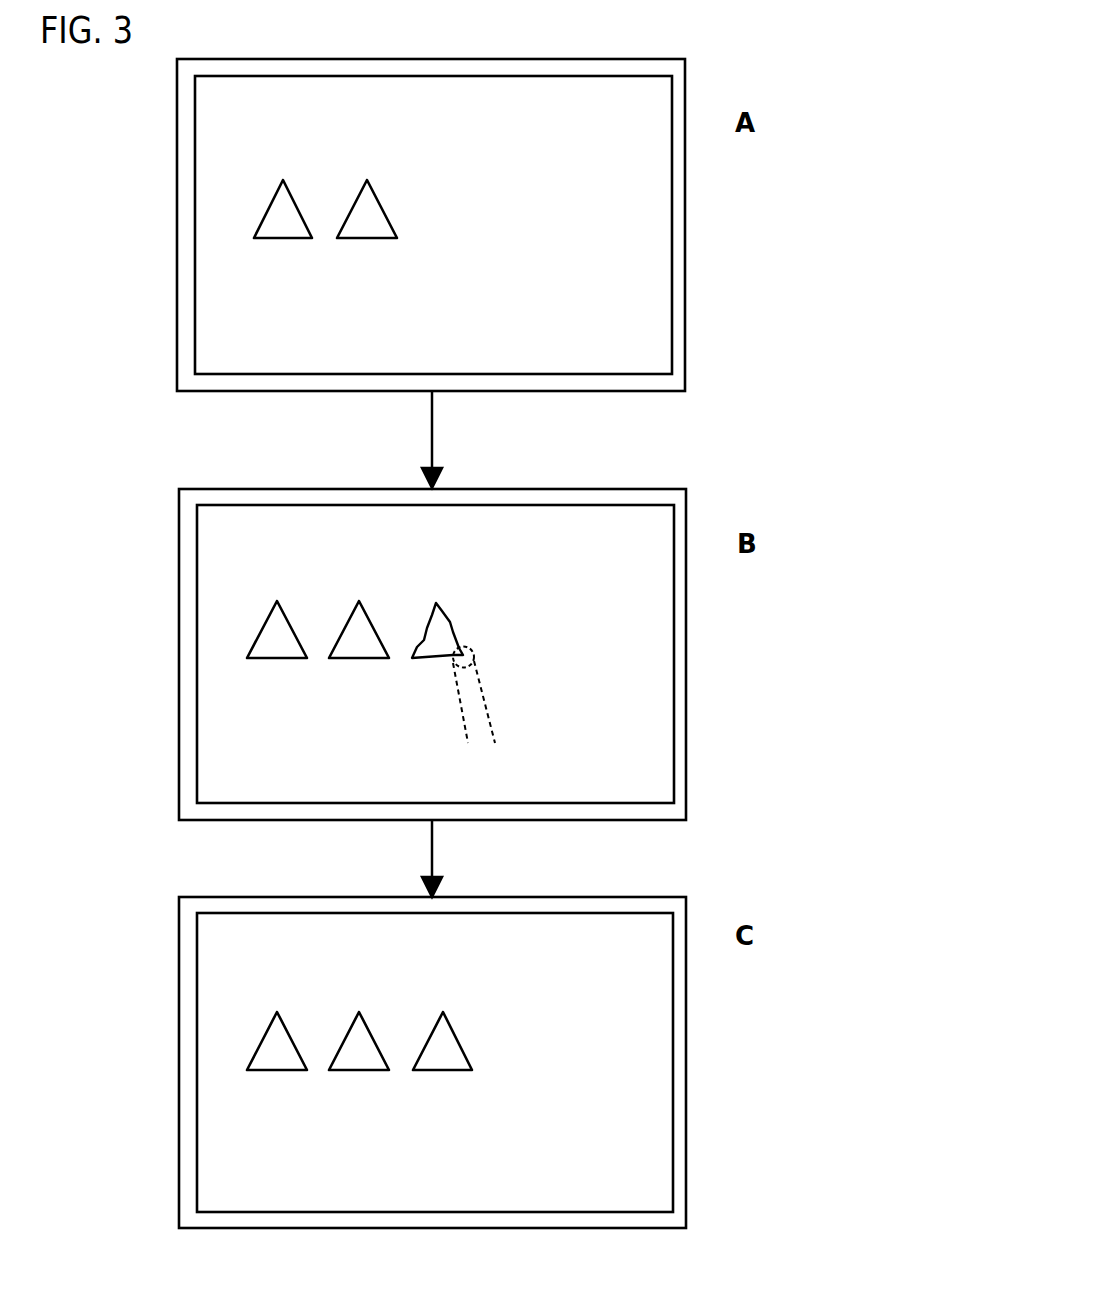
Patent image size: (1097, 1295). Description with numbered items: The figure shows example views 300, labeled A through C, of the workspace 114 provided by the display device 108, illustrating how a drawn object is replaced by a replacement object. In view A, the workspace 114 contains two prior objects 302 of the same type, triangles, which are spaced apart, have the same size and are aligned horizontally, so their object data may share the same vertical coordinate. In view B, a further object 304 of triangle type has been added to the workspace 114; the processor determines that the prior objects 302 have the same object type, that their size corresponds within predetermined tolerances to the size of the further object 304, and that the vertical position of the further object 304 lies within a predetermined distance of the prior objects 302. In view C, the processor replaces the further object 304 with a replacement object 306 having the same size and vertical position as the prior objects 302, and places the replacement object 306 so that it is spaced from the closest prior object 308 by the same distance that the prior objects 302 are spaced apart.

The example views 300 is at (741, 54).
The display device 108 is at (177, 118).
The workspace 114 is at (318, 100).
The prior objects 302 is at (306, 269).
The further object 304 is at (460, 635).
The replacement object 306 is at (463, 1045).
The closest prior object 308 is at (372, 623).